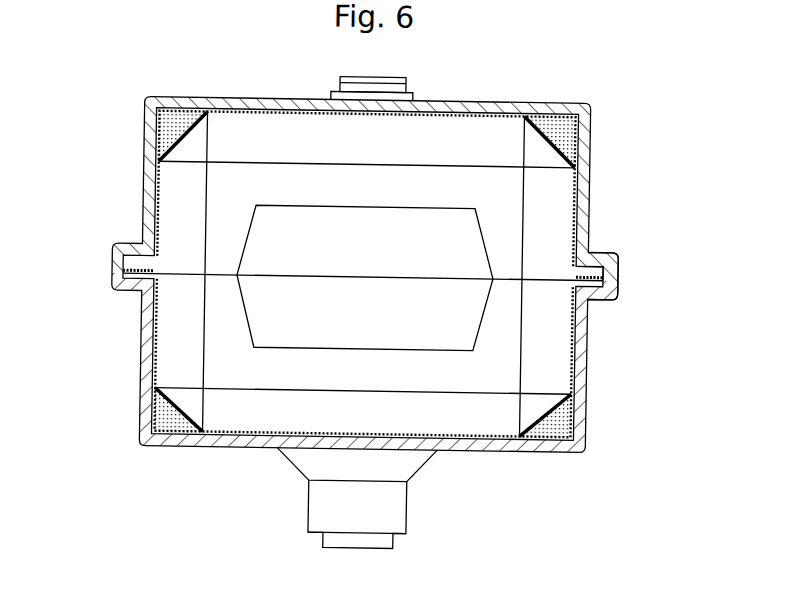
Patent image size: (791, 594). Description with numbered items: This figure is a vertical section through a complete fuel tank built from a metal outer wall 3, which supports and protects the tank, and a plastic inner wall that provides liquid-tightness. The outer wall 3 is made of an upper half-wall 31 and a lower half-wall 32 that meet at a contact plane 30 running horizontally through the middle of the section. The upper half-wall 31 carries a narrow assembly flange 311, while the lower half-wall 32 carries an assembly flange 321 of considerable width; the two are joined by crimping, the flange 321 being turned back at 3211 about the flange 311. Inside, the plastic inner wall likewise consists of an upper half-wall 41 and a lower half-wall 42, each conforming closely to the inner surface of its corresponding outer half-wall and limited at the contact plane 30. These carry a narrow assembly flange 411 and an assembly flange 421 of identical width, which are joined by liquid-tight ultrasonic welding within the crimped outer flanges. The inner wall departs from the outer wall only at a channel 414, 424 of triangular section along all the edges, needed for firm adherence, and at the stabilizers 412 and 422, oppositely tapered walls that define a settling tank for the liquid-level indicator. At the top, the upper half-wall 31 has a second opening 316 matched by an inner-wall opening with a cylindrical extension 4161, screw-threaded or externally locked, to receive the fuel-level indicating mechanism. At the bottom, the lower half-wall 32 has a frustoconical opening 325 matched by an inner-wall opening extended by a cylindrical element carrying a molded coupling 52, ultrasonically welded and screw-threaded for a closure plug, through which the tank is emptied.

The metal outer wall 3 is at (151, 210).
The contact plane 30 is at (302, 274).
The upper half-wall 31 is at (580, 157).
The lower half-wall 32 is at (580, 385).
The upper half-wall 41 is at (576, 185).
The lower half-wall 42 is at (574, 354).
The narrow assembly flange 311 is at (597, 266).
The assembly flange 321 is at (598, 286).
The turned-back portion 3211 is at (594, 254).
The narrow assembly flange 411 is at (605, 273).
The assembly flange 421 is at (605, 283).
The stabilizer 412 is at (240, 179).
The stabilizer 422 is at (286, 369).
The triangular channel 414 is at (174, 123).
The triangular channel 424 is at (179, 430).
The second opening 316 is at (407, 94).
The cylindrical extension 4161 is at (394, 82).
The opening 325 is at (428, 467).
The molded coupling 52 is at (416, 521).